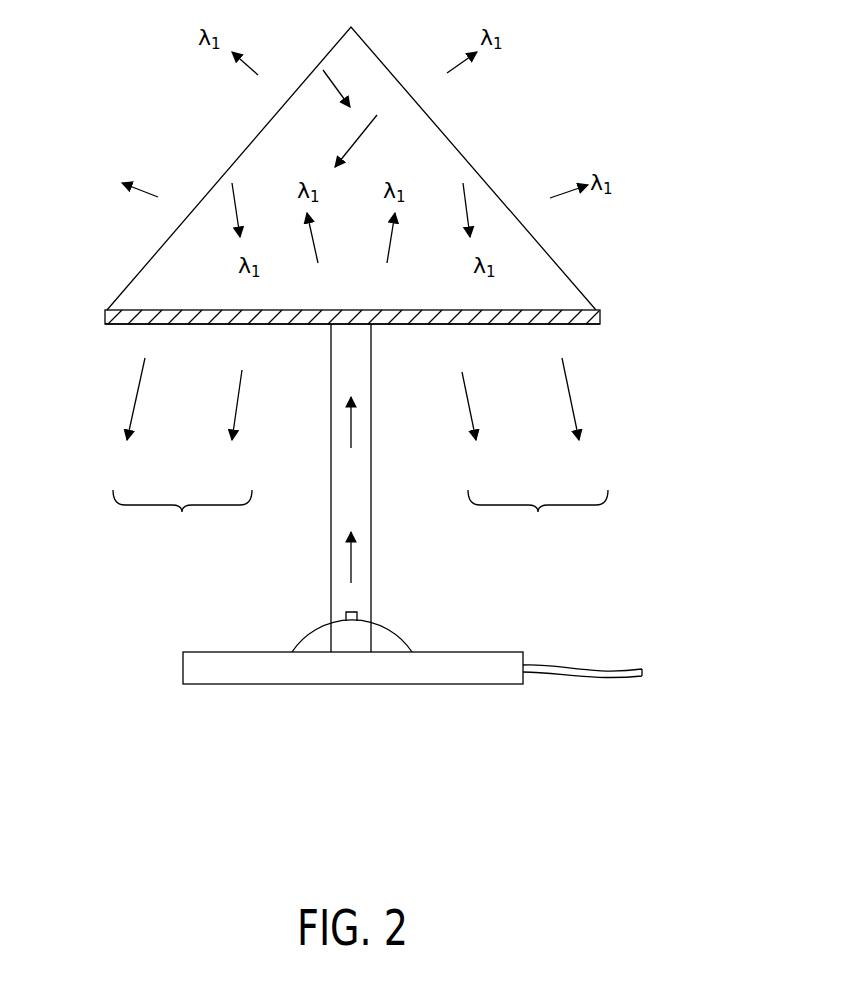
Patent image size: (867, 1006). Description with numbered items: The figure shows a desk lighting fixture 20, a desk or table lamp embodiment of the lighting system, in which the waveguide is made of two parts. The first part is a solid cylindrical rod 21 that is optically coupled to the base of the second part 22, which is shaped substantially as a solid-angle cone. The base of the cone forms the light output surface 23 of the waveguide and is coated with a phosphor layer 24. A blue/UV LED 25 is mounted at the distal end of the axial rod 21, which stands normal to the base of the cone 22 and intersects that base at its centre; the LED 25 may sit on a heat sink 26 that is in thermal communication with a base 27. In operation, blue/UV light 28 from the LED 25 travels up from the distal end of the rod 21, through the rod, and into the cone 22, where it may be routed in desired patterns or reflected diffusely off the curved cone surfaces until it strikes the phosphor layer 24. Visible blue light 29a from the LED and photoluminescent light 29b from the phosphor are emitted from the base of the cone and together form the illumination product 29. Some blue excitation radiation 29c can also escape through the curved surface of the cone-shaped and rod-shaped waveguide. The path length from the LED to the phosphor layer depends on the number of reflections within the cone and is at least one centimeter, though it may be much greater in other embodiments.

The desk lighting fixture 20 is at (697, 418).
The solid cylindrical rod 21 is at (372, 571).
The second part shaped as a solid-angle cone 22 is at (434, 123).
The light output surface 23 is at (513, 303).
The phosphor layer 24 is at (567, 317).
The blue/UV LED 25 is at (350, 612).
The heat sink 26 is at (388, 640).
The base 27 is at (505, 660).
The blue/UV light 28 is at (372, 548).
The illumination product 29 is at (360, 452).
The visible blue light 29a is at (137, 393).
The photoluminescent light from the phosphor(s) 29b is at (242, 392).
The blue excitation radiation 29c is at (147, 180).